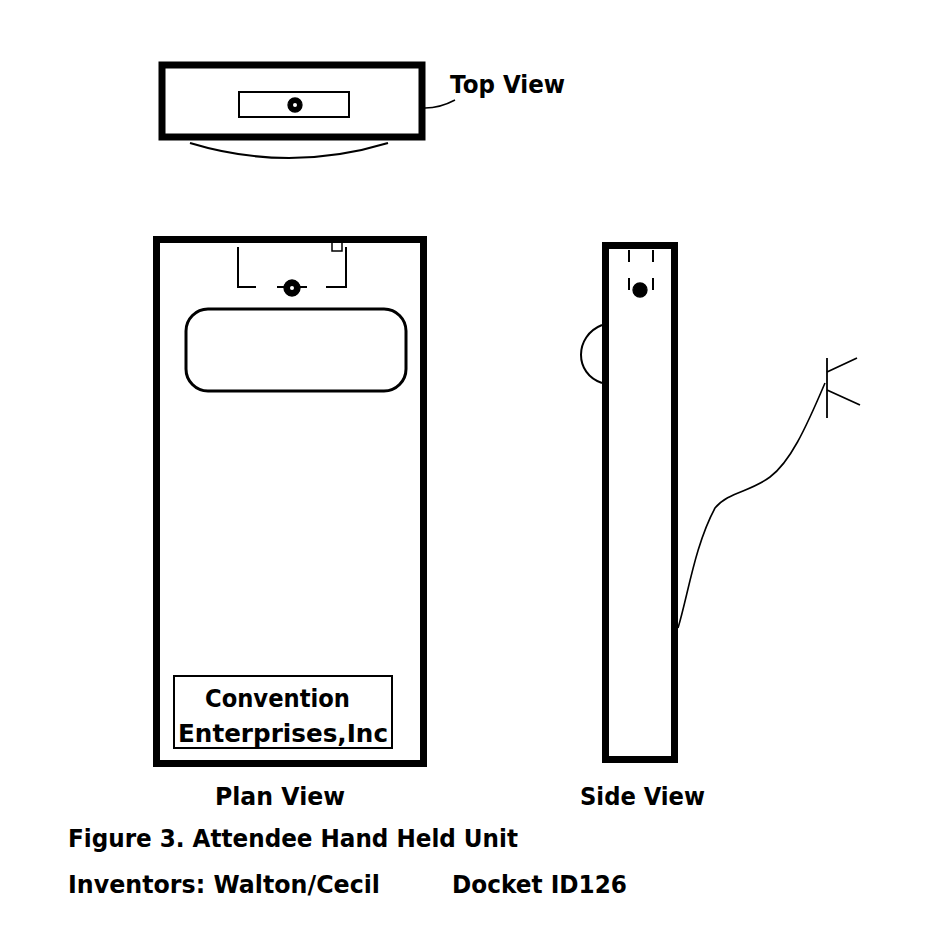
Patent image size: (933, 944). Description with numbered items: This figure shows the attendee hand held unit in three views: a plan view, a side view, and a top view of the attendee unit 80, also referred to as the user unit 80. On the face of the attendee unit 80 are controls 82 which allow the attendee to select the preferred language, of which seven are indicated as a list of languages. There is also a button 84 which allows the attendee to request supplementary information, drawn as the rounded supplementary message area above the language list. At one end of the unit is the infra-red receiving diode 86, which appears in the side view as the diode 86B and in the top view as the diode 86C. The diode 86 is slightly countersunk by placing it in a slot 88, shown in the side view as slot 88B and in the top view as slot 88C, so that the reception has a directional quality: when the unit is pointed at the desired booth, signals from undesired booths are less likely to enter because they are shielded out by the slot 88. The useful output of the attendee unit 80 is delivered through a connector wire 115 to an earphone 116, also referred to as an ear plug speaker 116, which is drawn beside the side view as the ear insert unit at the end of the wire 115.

The attendee unit 80 is at (153, 573).
The controls 82 is at (226, 437).
The button 84 is at (360, 319).
The infra-red receiving diode 86 is at (292, 280).
The slot 88 is at (335, 243).
The infra-red receiving diode 86B is at (647, 296).
The slot 88B is at (653, 257).
The infra-red receiving diode 86C is at (295, 98).
The slot 88C is at (323, 92).
The connector wire 115 is at (742, 494).
The earphone 116 is at (822, 365).